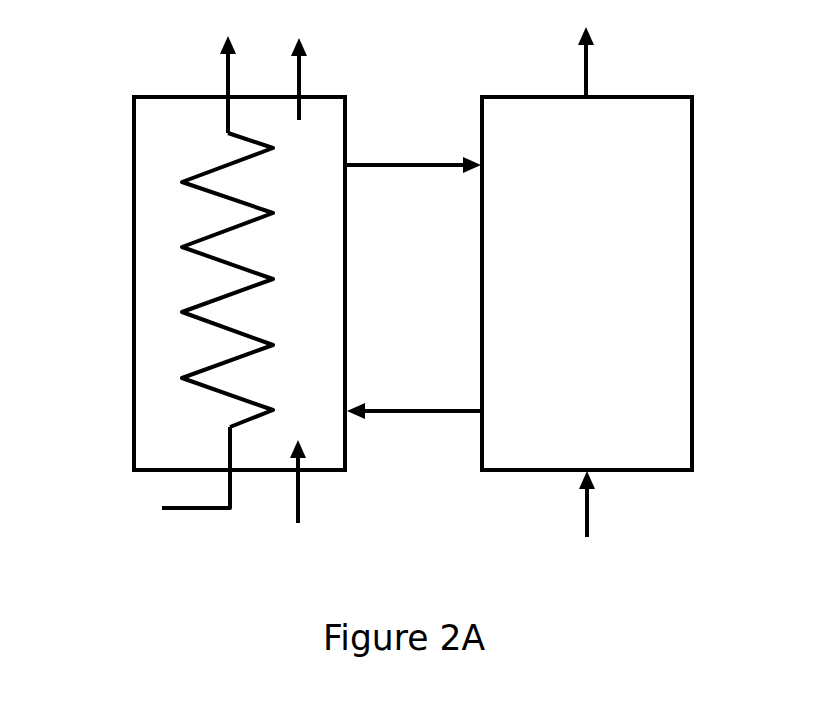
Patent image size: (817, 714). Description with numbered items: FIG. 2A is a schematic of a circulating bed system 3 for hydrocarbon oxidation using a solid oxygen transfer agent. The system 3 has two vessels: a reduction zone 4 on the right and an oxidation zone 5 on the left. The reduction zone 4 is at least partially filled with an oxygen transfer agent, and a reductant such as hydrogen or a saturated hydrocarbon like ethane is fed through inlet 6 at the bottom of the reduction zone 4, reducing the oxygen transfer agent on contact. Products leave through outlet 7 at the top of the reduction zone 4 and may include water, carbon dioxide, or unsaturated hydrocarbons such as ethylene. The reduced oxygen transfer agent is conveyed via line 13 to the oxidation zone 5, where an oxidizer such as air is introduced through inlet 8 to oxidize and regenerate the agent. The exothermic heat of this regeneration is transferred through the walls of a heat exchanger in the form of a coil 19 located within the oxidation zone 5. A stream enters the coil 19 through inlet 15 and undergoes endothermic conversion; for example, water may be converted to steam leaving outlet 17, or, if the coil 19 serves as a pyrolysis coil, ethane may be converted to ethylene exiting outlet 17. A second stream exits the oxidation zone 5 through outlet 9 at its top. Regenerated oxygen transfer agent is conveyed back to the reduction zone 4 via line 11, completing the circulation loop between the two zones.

The circulating bed system 3 is at (742, 177).
The reduction zone 4 is at (596, 279).
The oxidation zone 5 is at (308, 279).
The inlet 6 is at (594, 500).
The outlet 7 is at (594, 73).
The inlet 8 is at (303, 495).
The outlet stream 9 is at (303, 73).
The line 11 is at (388, 157).
The line 13 is at (392, 418).
The inlet 15 is at (195, 513).
The outlet 17 is at (226, 78).
The coil 19 is at (182, 247).